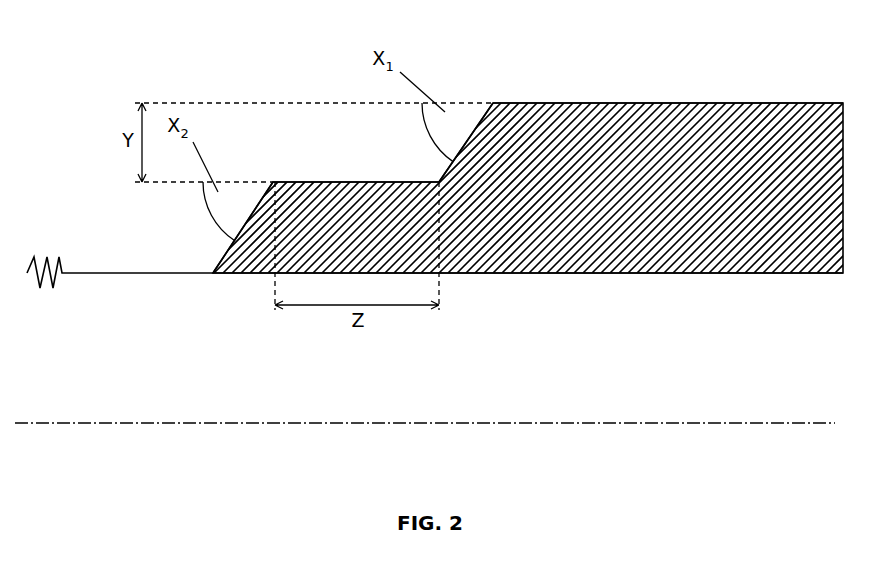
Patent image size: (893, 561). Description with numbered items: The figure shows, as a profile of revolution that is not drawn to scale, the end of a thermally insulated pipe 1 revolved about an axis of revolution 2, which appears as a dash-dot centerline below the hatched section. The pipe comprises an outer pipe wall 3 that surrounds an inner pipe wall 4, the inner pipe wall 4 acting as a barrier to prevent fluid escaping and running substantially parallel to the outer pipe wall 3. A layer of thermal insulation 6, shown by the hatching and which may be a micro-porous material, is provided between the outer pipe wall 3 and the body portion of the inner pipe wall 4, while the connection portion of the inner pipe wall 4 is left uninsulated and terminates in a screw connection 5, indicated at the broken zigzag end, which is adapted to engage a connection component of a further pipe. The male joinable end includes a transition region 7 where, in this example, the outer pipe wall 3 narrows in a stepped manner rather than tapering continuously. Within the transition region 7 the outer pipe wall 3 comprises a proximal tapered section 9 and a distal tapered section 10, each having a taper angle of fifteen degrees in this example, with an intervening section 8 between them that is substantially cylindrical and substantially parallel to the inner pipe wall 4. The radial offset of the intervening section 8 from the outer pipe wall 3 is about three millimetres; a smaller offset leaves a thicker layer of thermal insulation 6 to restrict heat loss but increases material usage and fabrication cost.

The thermally insulated pipe 1 is at (737, 62).
The axis of revolution 2 is at (238, 422).
The outer pipe wall 3 is at (581, 102).
The inner pipe wall 4 is at (797, 272).
The screw connection 5 is at (53, 312).
The layer of thermal insulation 6 is at (687, 258).
The transition region 7 is at (262, 121).
The intervening section 8 is at (340, 182).
The proximal tapered section 9 is at (451, 165).
The distal tapered section 10 is at (218, 262).